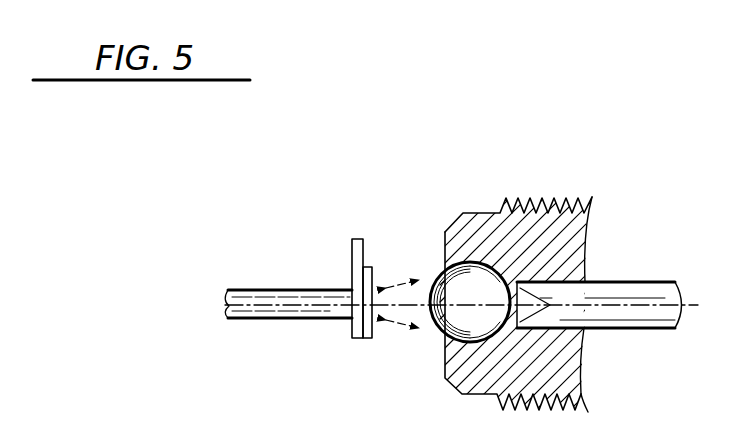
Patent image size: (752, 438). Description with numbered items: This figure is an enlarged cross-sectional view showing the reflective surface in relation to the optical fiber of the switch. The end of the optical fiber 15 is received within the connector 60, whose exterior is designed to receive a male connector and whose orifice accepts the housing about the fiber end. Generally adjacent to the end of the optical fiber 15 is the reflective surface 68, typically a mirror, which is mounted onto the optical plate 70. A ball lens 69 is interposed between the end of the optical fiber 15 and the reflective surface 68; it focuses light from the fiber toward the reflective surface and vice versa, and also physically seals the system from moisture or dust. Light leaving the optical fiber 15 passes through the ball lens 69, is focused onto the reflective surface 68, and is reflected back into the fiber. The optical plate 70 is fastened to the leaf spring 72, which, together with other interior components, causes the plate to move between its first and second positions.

The optical fiber 15 is at (613, 280).
The connector 60 is at (504, 212).
The reflective surface 68 is at (370, 265).
The ball lens 69 is at (441, 340).
The optical plate 70 is at (357, 237).
The leaf spring 72 is at (311, 289).